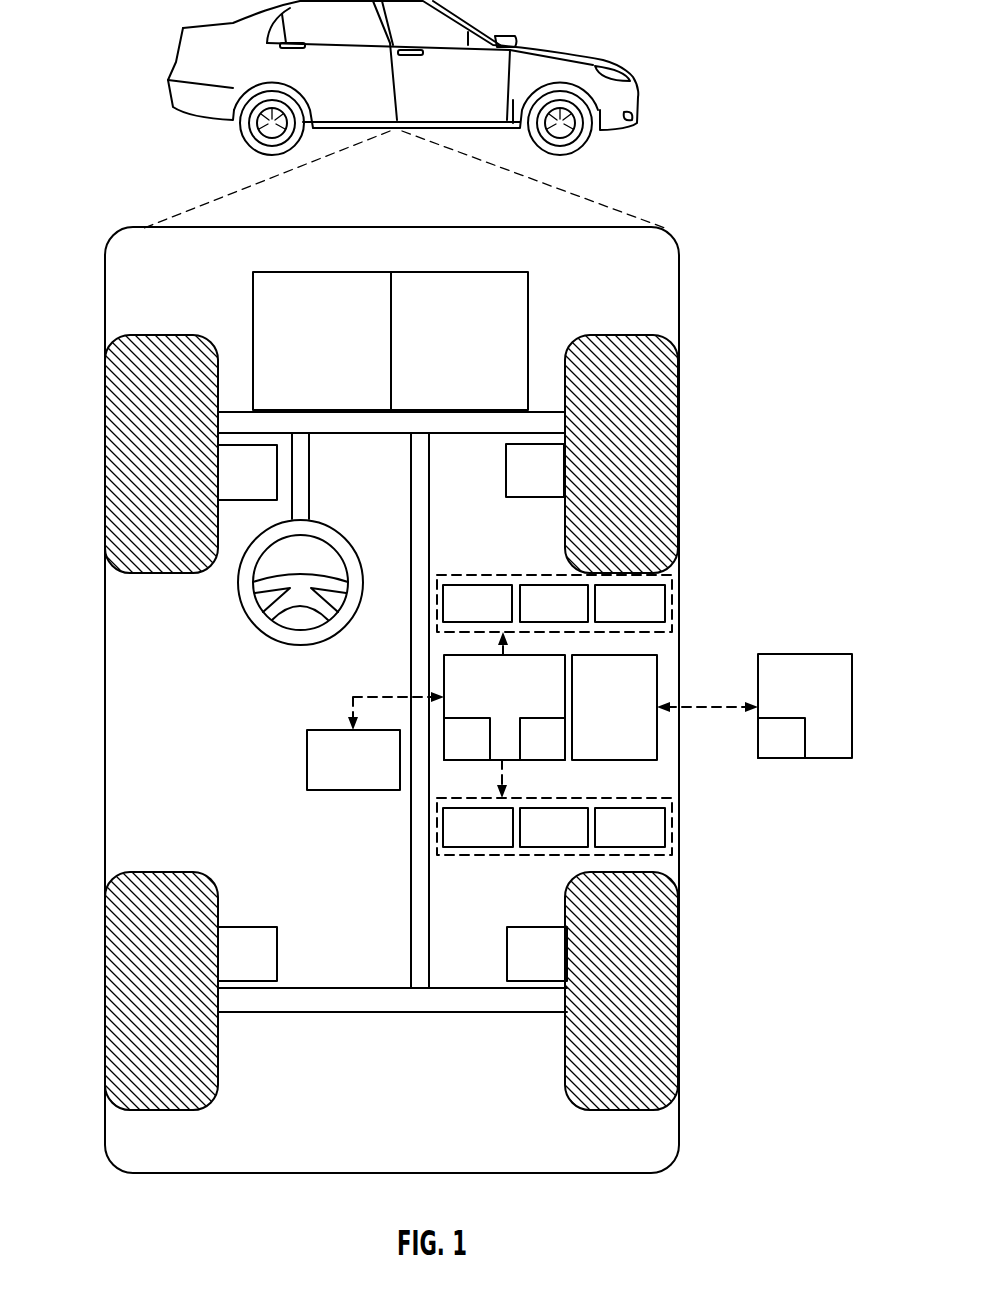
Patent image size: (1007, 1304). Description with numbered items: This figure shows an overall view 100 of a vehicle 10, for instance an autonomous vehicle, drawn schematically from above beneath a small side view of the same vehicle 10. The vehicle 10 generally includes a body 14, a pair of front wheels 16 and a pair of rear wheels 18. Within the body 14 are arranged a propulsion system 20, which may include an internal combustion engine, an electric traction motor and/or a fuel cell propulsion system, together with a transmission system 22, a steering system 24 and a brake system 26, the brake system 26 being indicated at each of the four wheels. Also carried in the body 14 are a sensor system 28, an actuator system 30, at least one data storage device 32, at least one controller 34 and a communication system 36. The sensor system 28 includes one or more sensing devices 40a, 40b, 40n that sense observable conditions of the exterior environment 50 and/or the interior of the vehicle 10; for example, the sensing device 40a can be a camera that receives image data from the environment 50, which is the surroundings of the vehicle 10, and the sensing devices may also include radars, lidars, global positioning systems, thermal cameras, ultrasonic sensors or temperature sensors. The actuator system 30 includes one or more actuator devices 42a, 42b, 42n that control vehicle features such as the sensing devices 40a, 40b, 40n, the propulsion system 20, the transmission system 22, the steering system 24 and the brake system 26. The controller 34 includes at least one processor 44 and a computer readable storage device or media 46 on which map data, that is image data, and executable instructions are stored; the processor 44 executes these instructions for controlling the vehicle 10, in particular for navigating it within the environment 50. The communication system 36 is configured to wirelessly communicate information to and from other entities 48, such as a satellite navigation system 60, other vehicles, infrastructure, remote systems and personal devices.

The vehicle 10 is at (180, 56).
The vehicle system 100 is at (700, 248).
The body 14 is at (105, 665).
The front wheels 16 is at (163, 335).
The rear wheels 18 is at (162, 1112).
The propulsion system 20 is at (335, 357).
The transmission system 22 is at (473, 357).
The steering system 24 is at (316, 494).
The brake system 26 is at (262, 488).
The sensor system 28 is at (517, 575).
The actuator system 30 is at (523, 855).
The data storage device 32 is at (367, 777).
The controller 34 is at (518, 703).
The communication system 36 is at (626, 720).
The sensing device 40a is at (497, 617).
The sensing device 40b is at (573, 617).
The sensing device 40n is at (650, 617).
The actuator device 42a is at (498, 840).
The actuator device 42b is at (573, 840).
The actuator device 42n is at (650, 840).
The processor 44 is at (479, 753).
The computer readable storage device or media 46 is at (555, 753).
The other entities 48 is at (818, 715).
The exterior environment 50 is at (755, 462).
The satellite navigation system 60 is at (795, 753).